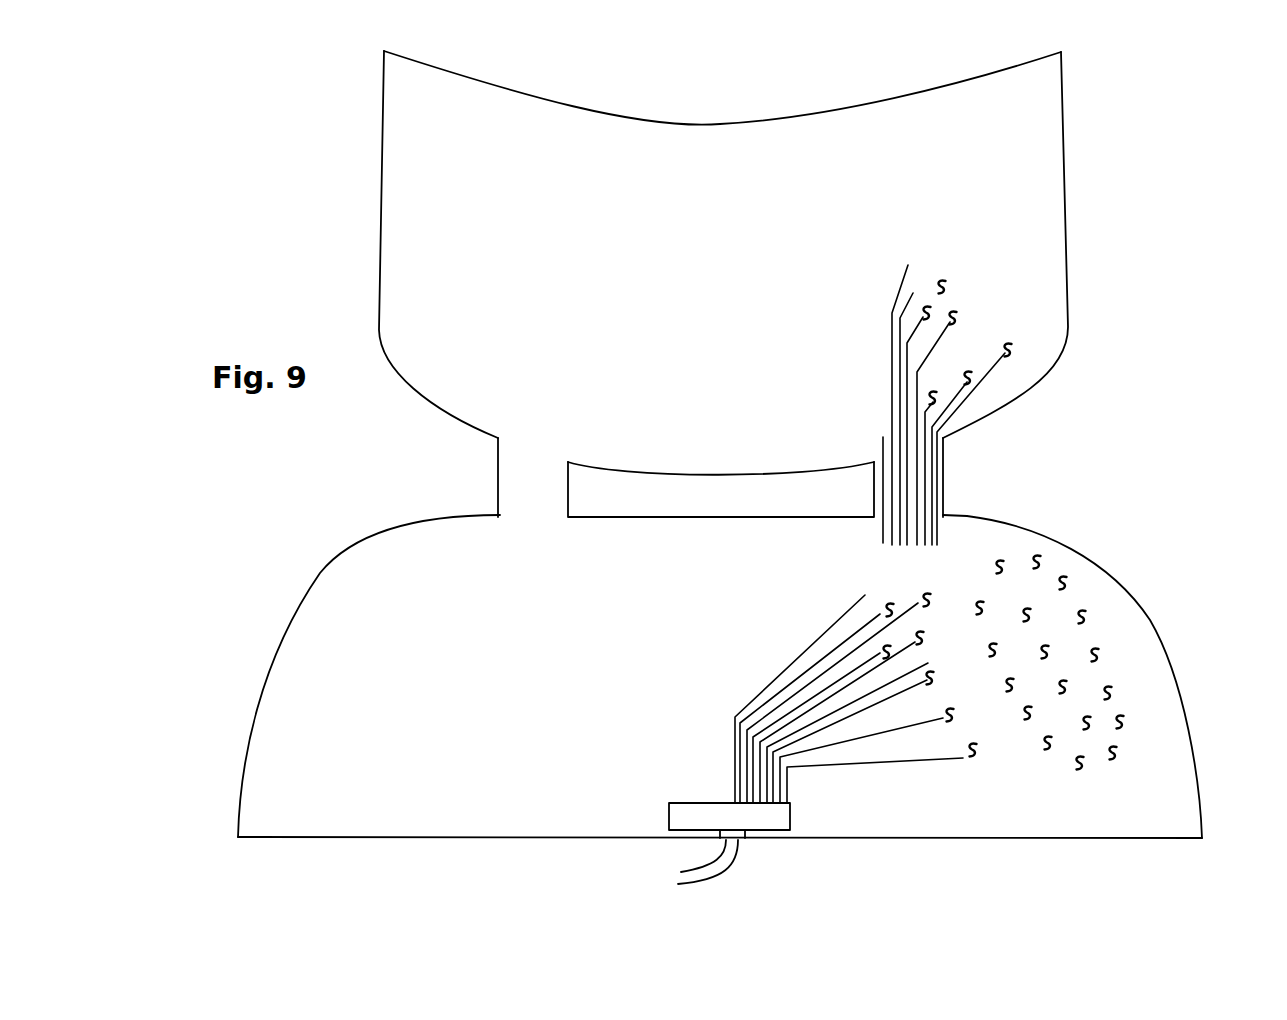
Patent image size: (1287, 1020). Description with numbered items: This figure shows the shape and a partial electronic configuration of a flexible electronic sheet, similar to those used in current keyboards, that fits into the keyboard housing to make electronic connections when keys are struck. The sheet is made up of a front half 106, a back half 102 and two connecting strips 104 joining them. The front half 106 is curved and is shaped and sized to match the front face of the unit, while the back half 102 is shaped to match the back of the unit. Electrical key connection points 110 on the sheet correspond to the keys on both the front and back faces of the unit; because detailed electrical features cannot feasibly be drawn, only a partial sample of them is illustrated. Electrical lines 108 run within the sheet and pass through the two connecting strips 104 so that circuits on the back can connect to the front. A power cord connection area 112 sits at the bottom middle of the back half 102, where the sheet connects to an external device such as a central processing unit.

The back half of the flexible electronic sheet 102 is at (255, 670).
The connecting strips 104 is at (522, 480).
The front half of the flexible electronic sheet 106 is at (358, 195).
The electrical lines 108 is at (928, 490).
The electrical key connection points 110 is at (1067, 581).
The power cord connection area 112 is at (763, 857).